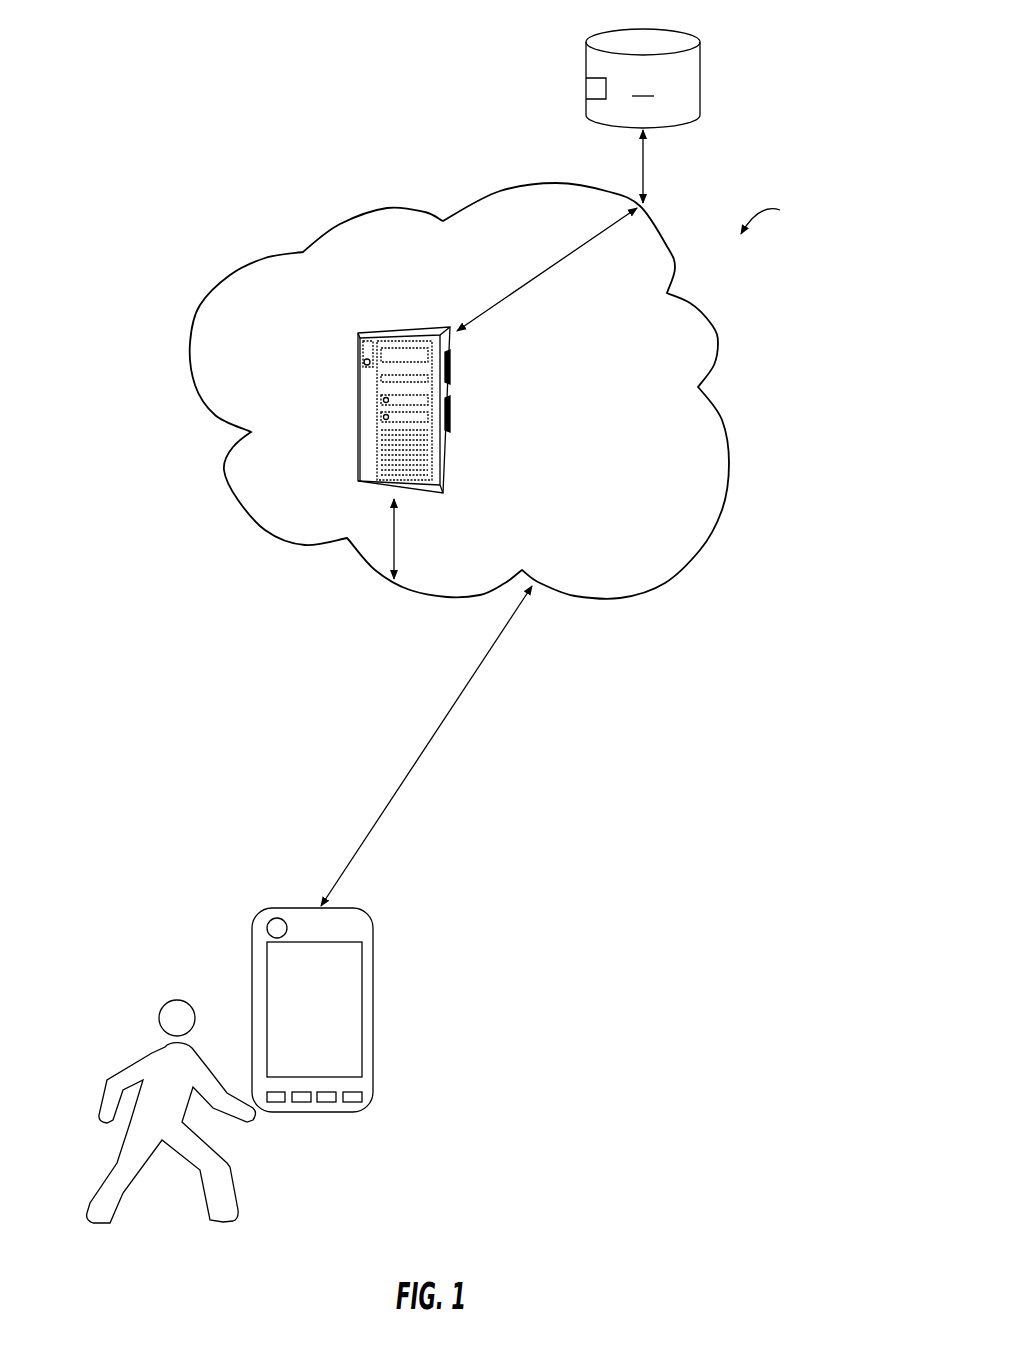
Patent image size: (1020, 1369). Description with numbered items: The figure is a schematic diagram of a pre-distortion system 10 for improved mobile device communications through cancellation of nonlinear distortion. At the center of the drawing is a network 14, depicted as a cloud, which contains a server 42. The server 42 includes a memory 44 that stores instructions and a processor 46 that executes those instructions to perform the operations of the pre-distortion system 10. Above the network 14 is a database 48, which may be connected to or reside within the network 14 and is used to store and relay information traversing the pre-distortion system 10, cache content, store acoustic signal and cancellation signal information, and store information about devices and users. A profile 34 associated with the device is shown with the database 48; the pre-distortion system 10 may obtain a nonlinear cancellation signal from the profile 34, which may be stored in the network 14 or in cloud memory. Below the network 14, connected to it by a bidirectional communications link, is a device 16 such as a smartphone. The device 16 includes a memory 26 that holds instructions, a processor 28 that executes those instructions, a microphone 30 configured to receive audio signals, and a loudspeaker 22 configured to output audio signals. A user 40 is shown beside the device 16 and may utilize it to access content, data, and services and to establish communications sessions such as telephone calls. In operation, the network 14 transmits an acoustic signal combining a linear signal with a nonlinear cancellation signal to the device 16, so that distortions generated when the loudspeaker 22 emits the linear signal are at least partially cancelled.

The pre-distortion system 10 is at (773, 214).
The network 14 is at (237, 450).
The device 16 is at (252, 960).
The loudspeaker 22 is at (327, 1104).
The memory 26 is at (276, 1104).
The processor 28 is at (352, 1104).
The microphone 30 is at (301, 1104).
The profile 34 is at (590, 82).
The user 40 is at (120, 1210).
The server 42 is at (356, 380).
The memory 44 is at (452, 366).
The processor 46 is at (452, 412).
The database 48 is at (643, 82).